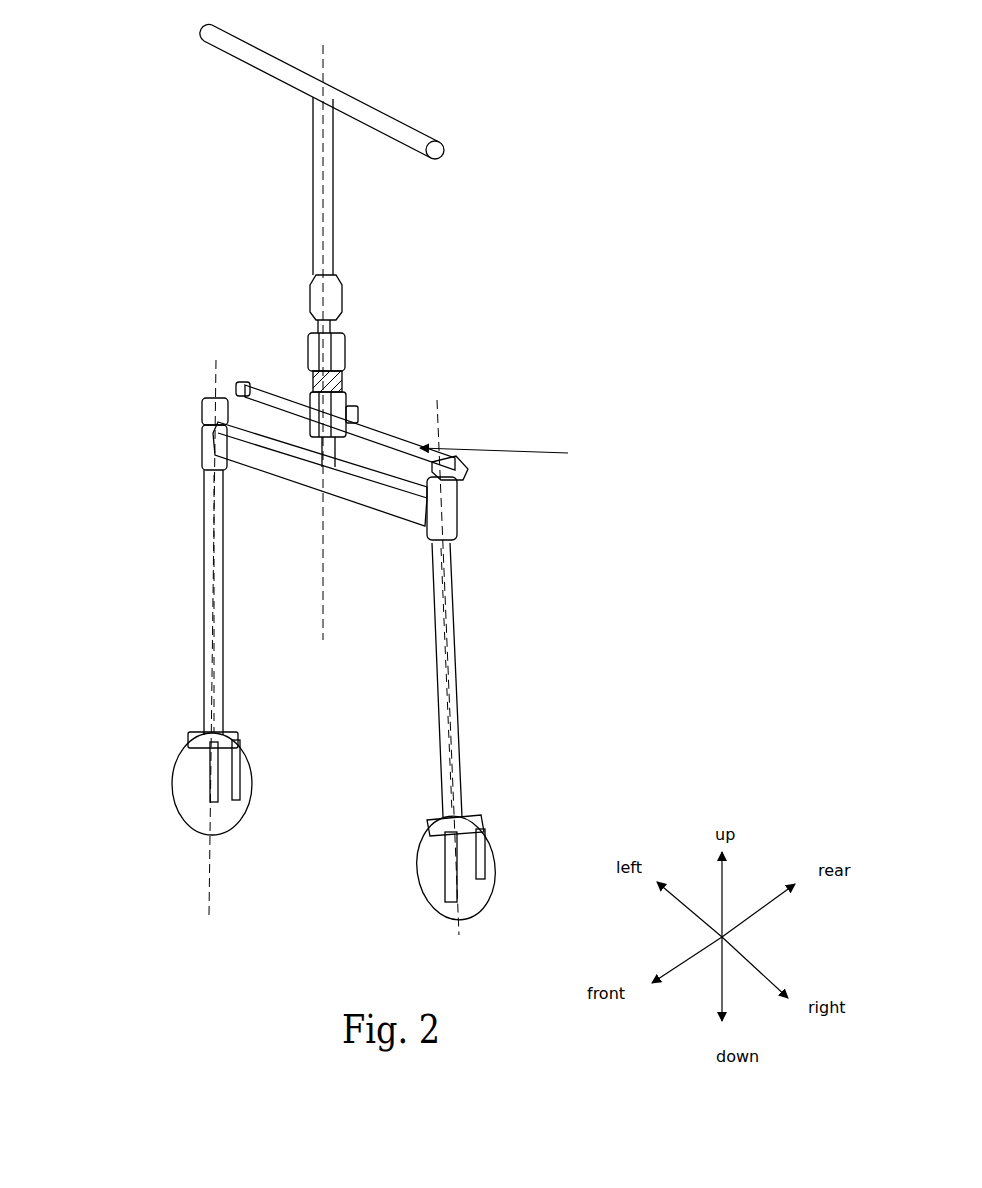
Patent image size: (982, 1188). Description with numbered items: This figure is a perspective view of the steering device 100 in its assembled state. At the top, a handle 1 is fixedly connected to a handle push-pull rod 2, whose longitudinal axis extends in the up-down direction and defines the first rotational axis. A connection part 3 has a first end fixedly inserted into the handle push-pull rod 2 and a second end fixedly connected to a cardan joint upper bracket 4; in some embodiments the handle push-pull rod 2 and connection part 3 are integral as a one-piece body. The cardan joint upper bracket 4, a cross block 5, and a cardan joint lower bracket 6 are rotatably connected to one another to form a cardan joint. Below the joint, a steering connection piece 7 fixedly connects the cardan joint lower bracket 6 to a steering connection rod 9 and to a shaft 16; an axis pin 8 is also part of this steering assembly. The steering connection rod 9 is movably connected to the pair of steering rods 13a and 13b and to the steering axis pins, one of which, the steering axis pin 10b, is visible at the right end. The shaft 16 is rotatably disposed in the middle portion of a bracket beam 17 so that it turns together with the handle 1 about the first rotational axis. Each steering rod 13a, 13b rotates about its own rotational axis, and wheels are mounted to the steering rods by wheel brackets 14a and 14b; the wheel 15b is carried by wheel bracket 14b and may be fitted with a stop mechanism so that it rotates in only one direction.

The handle 1 is at (290, 73).
The handle push-pull rod 2 is at (318, 207).
The connection part 3 is at (325, 269).
The cardan joint upper bracket 4 is at (317, 353).
The cross block 5 is at (348, 365).
The cardan joint lower bracket 6 is at (352, 401).
The steering connection piece 7 is at (356, 416).
The axis pin 8 is at (358, 424).
The steering connection rod 9 is at (495, 439).
The steering axis pin 10b is at (453, 480).
The steering rod 13a is at (218, 548).
The steering rod 13b is at (451, 570).
The wheel bracket 14a is at (190, 752).
The wheel bracket 14b is at (468, 812).
The wheel 15b is at (462, 893).
The shaft 16 is at (328, 468).
The bracket beam 17 is at (358, 488).
The steering device 100 is at (424, 469).